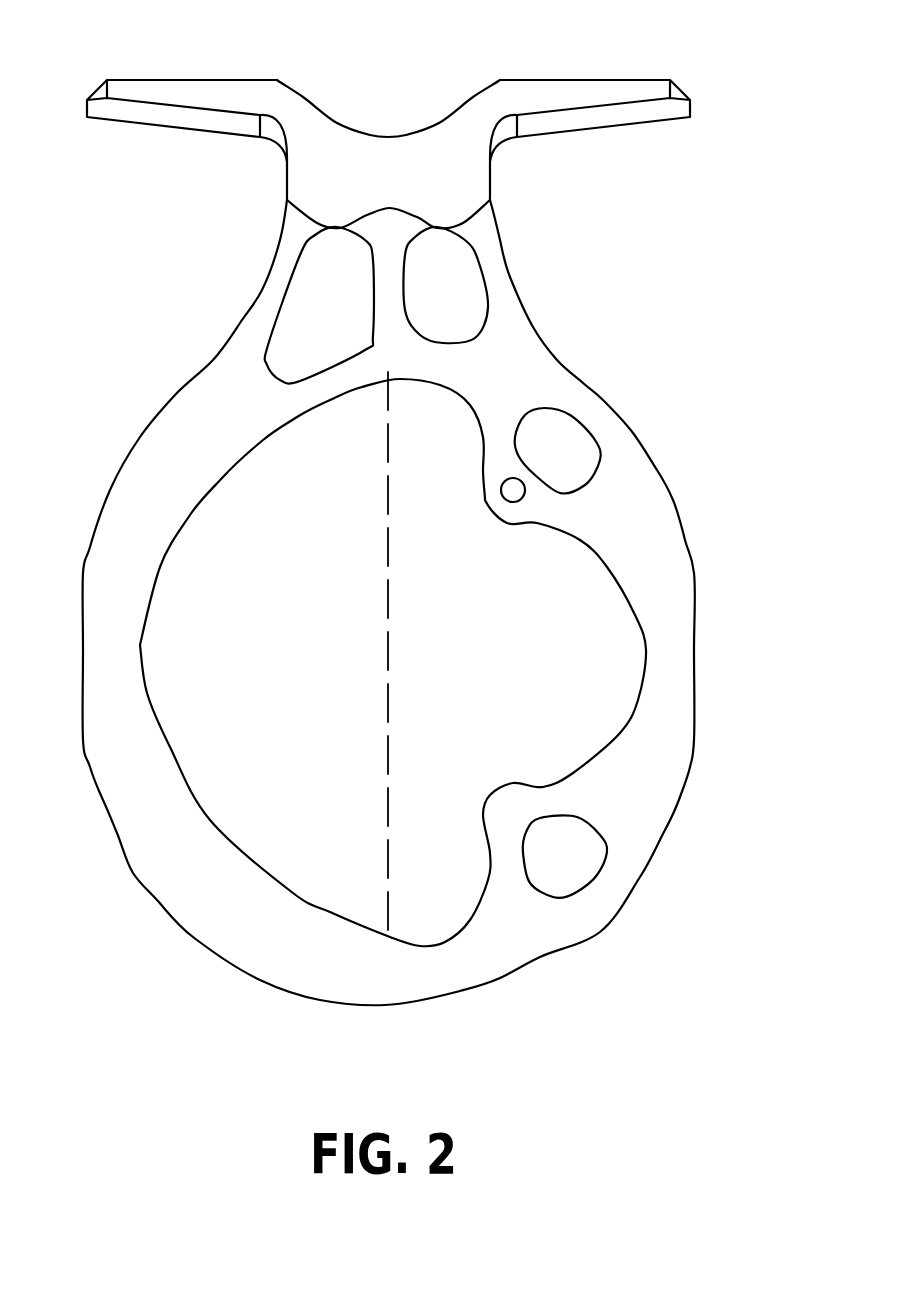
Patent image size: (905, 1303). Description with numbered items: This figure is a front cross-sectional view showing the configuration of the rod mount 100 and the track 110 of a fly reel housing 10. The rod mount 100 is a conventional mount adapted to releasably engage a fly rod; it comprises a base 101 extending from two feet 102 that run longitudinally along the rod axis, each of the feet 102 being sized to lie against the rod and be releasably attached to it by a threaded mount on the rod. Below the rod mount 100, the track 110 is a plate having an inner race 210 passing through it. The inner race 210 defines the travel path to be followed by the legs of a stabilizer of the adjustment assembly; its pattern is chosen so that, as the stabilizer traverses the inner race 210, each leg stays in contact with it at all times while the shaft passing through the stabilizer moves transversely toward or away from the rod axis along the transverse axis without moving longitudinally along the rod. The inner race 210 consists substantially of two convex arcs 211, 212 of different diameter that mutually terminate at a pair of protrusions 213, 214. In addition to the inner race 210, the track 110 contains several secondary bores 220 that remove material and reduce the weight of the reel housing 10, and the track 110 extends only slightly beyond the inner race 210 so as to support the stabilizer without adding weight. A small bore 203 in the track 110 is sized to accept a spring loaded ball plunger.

The reel housing 10 is at (150, 180).
The rod mount 100 is at (535, 178).
The base 101 is at (412, 165).
The feet 102 is at (195, 90).
The track 110 is at (135, 873).
The bore 203 is at (500, 490).
The inner race 210 is at (267, 440).
The convex arc 211 is at (170, 745).
The convex arc 212 is at (643, 653).
The protrusion 213 is at (493, 788).
The protrusion 214 is at (500, 530).
The secondary bores 220 is at (362, 297).